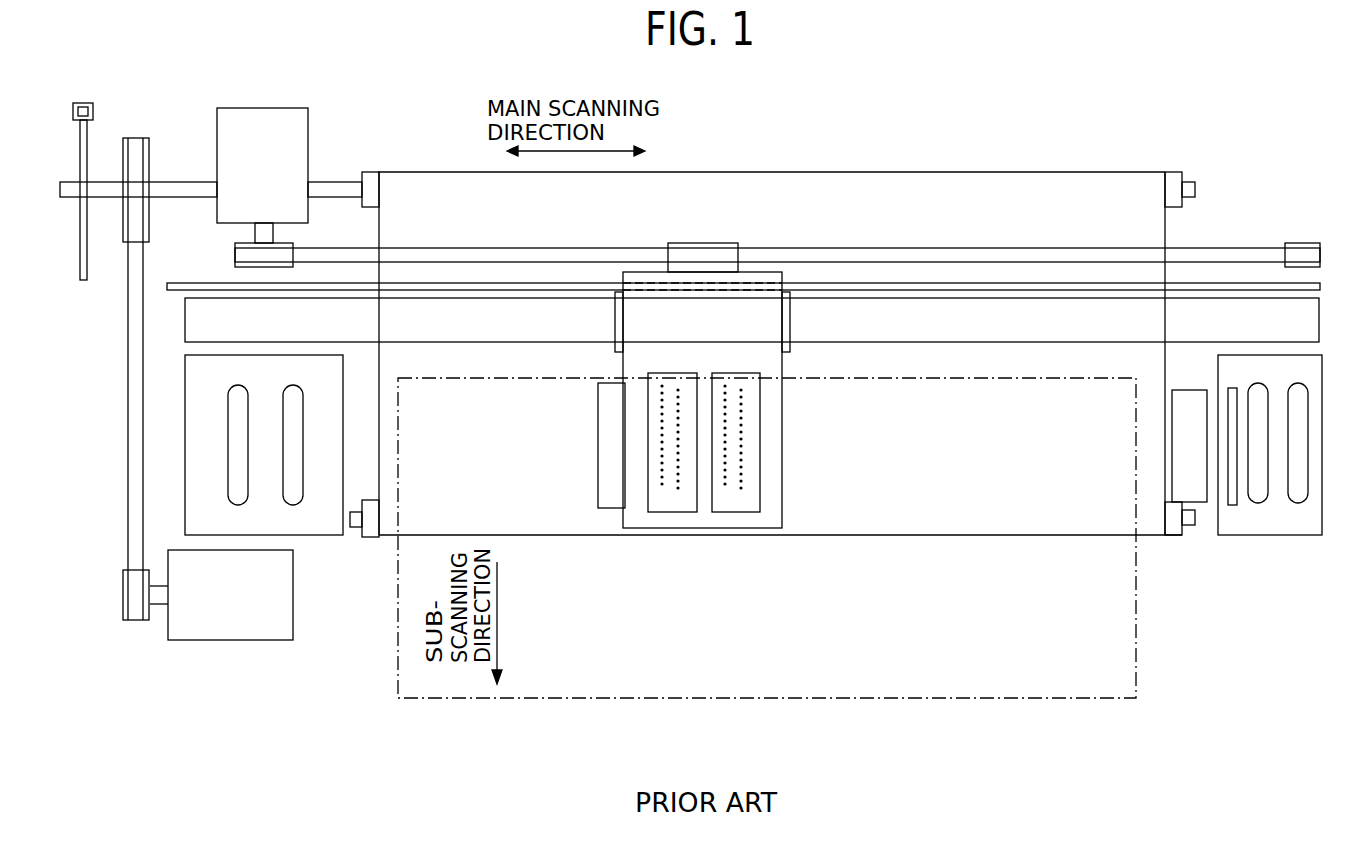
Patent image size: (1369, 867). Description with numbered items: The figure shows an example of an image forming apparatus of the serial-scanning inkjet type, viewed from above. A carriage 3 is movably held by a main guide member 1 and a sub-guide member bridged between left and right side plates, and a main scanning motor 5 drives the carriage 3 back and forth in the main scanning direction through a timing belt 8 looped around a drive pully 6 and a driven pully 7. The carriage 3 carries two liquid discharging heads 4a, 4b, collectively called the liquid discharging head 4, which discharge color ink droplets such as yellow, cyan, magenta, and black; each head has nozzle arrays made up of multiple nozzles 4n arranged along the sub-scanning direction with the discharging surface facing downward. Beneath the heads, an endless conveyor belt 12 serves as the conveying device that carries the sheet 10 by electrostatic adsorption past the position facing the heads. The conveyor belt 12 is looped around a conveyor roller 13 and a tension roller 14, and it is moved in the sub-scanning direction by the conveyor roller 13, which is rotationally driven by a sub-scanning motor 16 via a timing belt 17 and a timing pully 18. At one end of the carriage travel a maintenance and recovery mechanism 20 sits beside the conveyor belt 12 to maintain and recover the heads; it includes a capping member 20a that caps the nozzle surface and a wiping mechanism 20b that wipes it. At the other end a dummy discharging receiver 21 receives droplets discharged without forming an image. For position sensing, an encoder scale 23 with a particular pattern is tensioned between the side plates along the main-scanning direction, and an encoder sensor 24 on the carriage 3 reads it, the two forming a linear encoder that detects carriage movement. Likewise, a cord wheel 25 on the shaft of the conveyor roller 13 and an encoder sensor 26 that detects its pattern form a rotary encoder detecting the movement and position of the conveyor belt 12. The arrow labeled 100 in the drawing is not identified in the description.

The main guide member 1 is at (1320, 318).
The carriage 3 is at (772, 368).
The liquid discharging head 4 is at (743, 580).
The liquid discharging head 4a is at (672, 505).
The liquid discharging head 4b is at (735, 505).
The nozzles 4n is at (658, 475).
The main scanning motor 5 is at (240, 108).
The drive pully 6 is at (245, 243).
The driven pully 7 is at (1300, 242).
The timing belt 8 is at (478, 247).
The sheet 10 is at (1138, 672).
The conveyor belt 12 is at (1115, 180).
The conveyor roller 13 is at (1172, 173).
The tension roller 14 is at (1173, 532).
The sub-scanning motor 16 is at (262, 640).
The timing belt 17 is at (128, 368).
The timing pully 18 is at (147, 137).
The maintenance and recovery mechanism 20 is at (1323, 383).
The capping member 20a is at (1257, 503).
The wiping mechanism 20b is at (1233, 505).
The dummy discharging receiver 21 is at (312, 537).
The encoder scale 23 is at (1227, 283).
The encoder sensor 24 is at (701, 283).
The cord wheel 25 is at (80, 250).
The encoder sensor 26 is at (80, 103).
The recording medium position / sheet 100 is at (1202, 506).